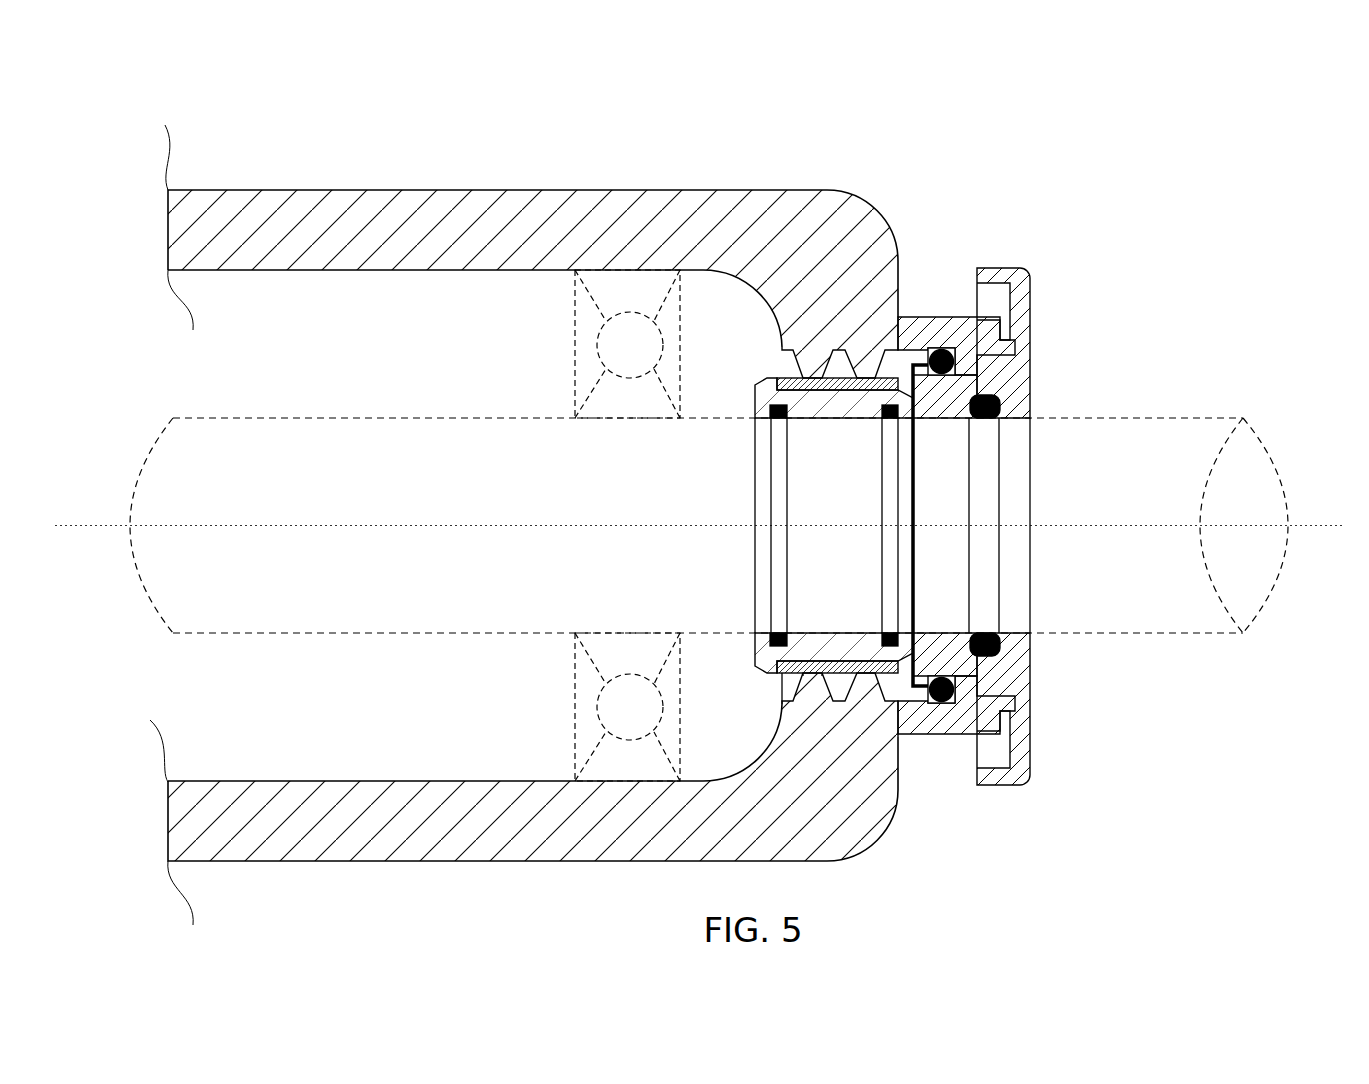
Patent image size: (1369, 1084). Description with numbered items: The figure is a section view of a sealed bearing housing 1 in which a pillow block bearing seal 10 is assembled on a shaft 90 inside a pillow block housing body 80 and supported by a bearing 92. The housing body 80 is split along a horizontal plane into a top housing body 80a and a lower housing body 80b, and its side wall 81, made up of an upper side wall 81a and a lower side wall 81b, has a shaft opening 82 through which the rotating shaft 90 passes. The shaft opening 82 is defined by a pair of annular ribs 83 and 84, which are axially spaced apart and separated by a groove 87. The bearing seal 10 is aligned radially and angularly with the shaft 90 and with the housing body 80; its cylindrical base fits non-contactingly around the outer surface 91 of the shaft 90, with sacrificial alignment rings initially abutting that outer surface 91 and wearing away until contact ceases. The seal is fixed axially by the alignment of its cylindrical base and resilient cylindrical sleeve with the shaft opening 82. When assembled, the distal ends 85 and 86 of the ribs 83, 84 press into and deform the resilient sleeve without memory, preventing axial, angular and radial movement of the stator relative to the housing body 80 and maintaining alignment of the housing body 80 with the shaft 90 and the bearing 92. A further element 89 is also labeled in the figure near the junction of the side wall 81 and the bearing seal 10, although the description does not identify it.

The sealed bearing housing 1 is at (481, 126).
The bearing seal 10 is at (1126, 344).
The housing body 80 is at (225, 218).
The top housing body 80a is at (372, 232).
The lower housing body 80b is at (345, 822).
The side wall 81 is at (793, 302).
The upper side wall 81a is at (860, 282).
The lower side wall 81b is at (863, 832).
The shaft opening 82 is at (768, 684).
The annular rib 83 is at (790, 355).
The annular rib 84 is at (870, 350).
The distal end 85 is at (813, 373).
The distal end 86 is at (867, 390).
The groove 87 is at (830, 295).
The collar 89 is at (903, 312).
The shaft 90 is at (233, 467).
The outer surface 91 is at (1156, 585).
The bearing 92 is at (573, 370).